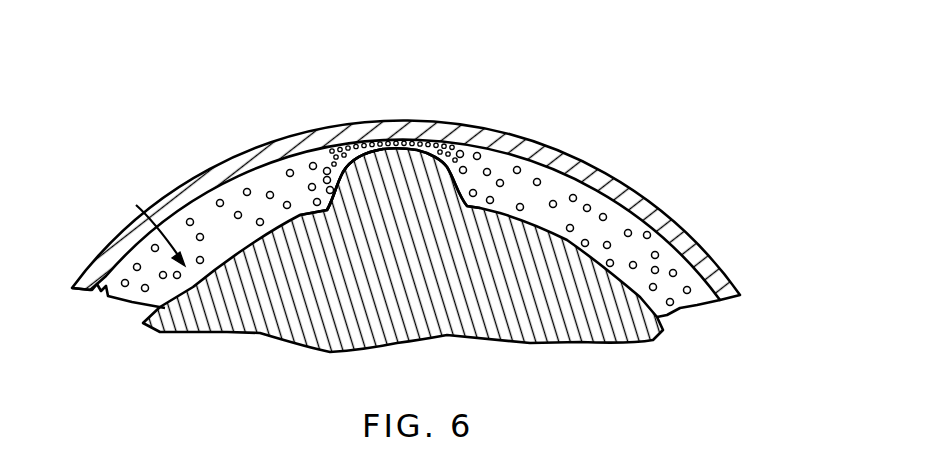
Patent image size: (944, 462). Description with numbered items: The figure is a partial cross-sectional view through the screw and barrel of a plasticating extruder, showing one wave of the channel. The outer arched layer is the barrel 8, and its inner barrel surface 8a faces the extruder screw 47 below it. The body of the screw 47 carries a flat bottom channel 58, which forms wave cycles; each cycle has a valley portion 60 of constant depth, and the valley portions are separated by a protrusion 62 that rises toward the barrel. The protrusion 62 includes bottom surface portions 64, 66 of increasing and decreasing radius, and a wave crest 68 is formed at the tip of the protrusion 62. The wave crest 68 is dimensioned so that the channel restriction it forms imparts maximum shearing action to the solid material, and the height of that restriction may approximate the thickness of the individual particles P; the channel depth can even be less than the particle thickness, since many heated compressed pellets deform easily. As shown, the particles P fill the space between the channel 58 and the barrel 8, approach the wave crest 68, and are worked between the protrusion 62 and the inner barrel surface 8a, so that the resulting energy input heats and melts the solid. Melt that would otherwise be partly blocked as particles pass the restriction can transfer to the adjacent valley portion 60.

The barrel 8 is at (697, 247).
The inner barrel surface 8a is at (112, 275).
The extruder screw 47 is at (523, 327).
The flat bottom channel 58 is at (136, 205).
The valley portion 60 is at (240, 247).
The protrusion 62 is at (432, 172).
The bottom surface portion of increasing radius 64 is at (340, 177).
The bottom surface portion of decreasing radius 66 is at (460, 192).
The wave crest 68 is at (405, 147).
The particles P is at (247, 189).